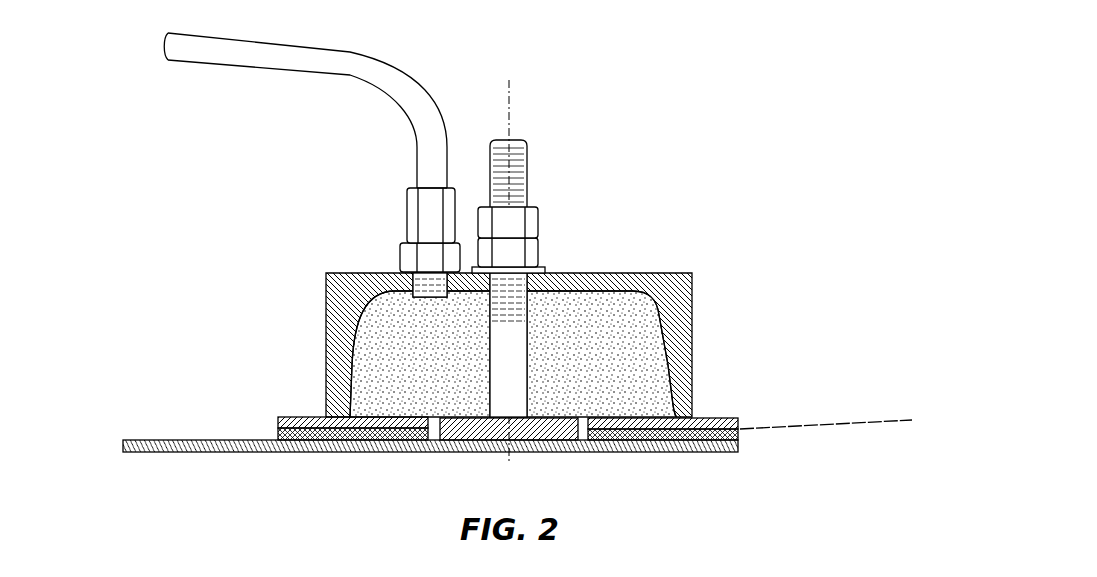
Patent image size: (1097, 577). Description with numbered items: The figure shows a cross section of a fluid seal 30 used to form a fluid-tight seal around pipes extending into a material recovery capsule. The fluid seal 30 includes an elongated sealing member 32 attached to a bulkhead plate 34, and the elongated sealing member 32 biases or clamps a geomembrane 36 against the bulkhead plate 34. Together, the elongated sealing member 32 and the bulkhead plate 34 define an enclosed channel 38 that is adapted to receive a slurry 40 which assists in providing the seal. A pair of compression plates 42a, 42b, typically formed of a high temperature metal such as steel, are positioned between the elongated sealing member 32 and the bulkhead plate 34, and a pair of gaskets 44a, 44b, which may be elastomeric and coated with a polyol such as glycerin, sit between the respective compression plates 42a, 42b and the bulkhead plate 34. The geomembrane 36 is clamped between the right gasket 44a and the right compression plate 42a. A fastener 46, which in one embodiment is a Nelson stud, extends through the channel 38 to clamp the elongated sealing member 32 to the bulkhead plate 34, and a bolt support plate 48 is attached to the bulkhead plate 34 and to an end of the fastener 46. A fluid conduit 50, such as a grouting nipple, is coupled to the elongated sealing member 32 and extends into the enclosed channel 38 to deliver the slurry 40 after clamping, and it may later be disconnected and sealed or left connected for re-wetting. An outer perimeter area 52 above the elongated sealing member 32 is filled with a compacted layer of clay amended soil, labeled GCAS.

The fluid seal 30 is at (517, 268).
The elongated sealing member 32 is at (693, 290).
The bulkhead plate 34 is at (158, 440).
The geomembrane 36 is at (812, 425).
The enclosed channel 38 is at (386, 337).
The slurry 40 is at (368, 368).
The right compression plate 42a is at (717, 418).
The compression plate 42b is at (290, 417).
The right gasket 44a is at (740, 432).
The gasket 44b is at (278, 433).
The fastener 46 is at (552, 184).
The bolt support plate 48 is at (558, 433).
The fluid conduit 50 is at (376, 173).
The outer perimeter area 52 is at (243, 186).